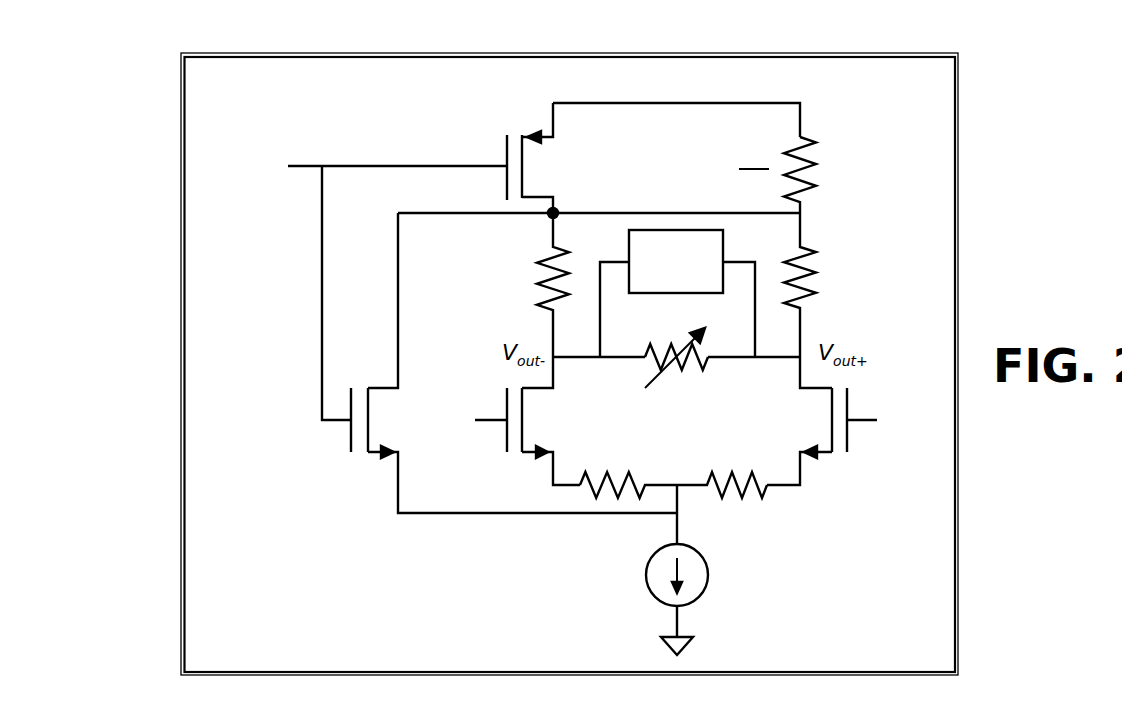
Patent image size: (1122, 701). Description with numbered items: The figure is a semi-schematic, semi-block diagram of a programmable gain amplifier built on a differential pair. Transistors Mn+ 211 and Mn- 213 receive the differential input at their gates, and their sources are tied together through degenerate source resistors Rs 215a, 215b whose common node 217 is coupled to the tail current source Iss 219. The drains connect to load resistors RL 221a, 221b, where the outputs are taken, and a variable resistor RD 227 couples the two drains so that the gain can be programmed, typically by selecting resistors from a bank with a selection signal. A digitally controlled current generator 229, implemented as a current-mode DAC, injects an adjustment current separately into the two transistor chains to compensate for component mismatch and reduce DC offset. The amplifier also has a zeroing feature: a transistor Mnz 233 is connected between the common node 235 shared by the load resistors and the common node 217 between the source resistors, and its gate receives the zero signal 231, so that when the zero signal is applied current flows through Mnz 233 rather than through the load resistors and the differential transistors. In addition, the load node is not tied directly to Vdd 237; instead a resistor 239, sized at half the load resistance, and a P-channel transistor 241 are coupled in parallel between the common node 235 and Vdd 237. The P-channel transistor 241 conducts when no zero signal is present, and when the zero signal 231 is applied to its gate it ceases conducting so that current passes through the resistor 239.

The zero signal 231 is at (333, 166).
The P-channel transistor 241 is at (503, 147).
The Vdd 237 is at (728, 103).
The resistor 239 is at (815, 140).
The common node 235 is at (587, 213).
The load resistor RL 221a is at (537, 253).
The load resistor RL 221b is at (812, 247).
The digitally controlled current generator 229 is at (725, 240).
The variable resistor RD 227 is at (693, 363).
The transistor Mn+ 211 is at (527, 455).
The transistor Mn- 213 is at (827, 455).
The transistor Mnz 233 is at (372, 455).
The degenerate source resistor Rs 215a is at (628, 452).
The degenerate source resistor Rs 215b is at (768, 497).
The common node 217 is at (677, 498).
The current source Iss 219 is at (699, 553).